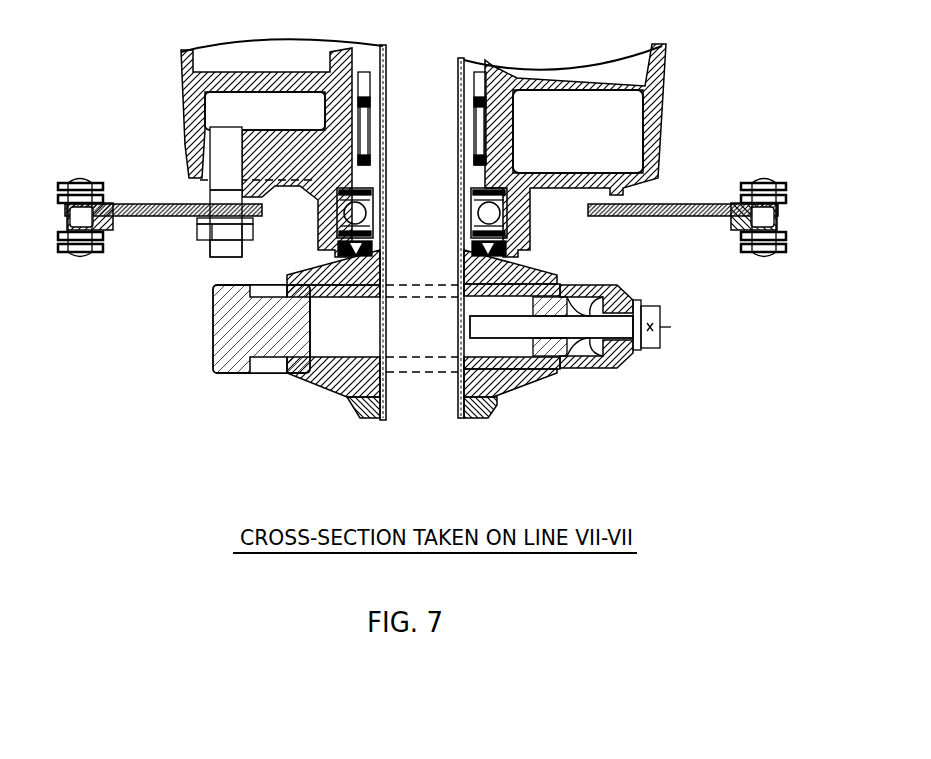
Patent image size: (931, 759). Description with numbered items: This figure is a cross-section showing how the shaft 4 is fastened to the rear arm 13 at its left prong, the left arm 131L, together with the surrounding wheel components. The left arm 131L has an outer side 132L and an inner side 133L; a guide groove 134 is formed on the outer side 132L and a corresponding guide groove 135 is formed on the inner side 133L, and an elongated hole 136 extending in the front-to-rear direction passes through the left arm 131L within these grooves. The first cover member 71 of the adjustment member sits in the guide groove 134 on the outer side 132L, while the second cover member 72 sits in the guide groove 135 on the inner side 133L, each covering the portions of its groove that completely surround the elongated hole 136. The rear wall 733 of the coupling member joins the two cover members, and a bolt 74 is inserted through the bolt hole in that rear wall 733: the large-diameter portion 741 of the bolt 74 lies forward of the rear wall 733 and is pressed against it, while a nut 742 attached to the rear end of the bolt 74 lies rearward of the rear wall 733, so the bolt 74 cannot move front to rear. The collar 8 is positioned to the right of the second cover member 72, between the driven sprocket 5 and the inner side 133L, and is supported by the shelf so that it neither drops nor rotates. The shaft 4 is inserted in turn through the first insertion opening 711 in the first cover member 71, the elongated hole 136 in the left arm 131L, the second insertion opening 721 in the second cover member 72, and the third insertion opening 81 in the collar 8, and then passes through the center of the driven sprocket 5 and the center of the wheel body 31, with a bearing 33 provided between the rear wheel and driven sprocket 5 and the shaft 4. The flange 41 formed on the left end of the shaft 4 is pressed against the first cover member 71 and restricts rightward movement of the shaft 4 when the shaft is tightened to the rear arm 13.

The shaft 4 is at (513, 105).
The driven sprocket 5 is at (688, 205).
The collar 8 is at (488, 256).
The rear arm 13 is at (234, 338).
The wheel body 31 is at (586, 150).
The bearing 33 is at (375, 194).
The flange 41 is at (480, 413).
The first cover member 71 is at (513, 388).
The second cover member 72 is at (315, 342).
The bolt 74 is at (586, 341).
The third insertion opening 81 is at (380, 260).
The left arm 131L is at (227, 334).
The outer side 132L is at (228, 374).
The inner side 133L is at (228, 282).
The guide groove 134 is at (251, 368).
The guide groove 135 is at (252, 283).
The elongated hole 136 is at (320, 335).
The first insertion opening 711 is at (394, 377).
The second insertion opening 721 is at (452, 300).
The rear wall 733 is at (635, 355).
The large-diameter portion 741 is at (597, 286).
The nut 742 is at (645, 300).